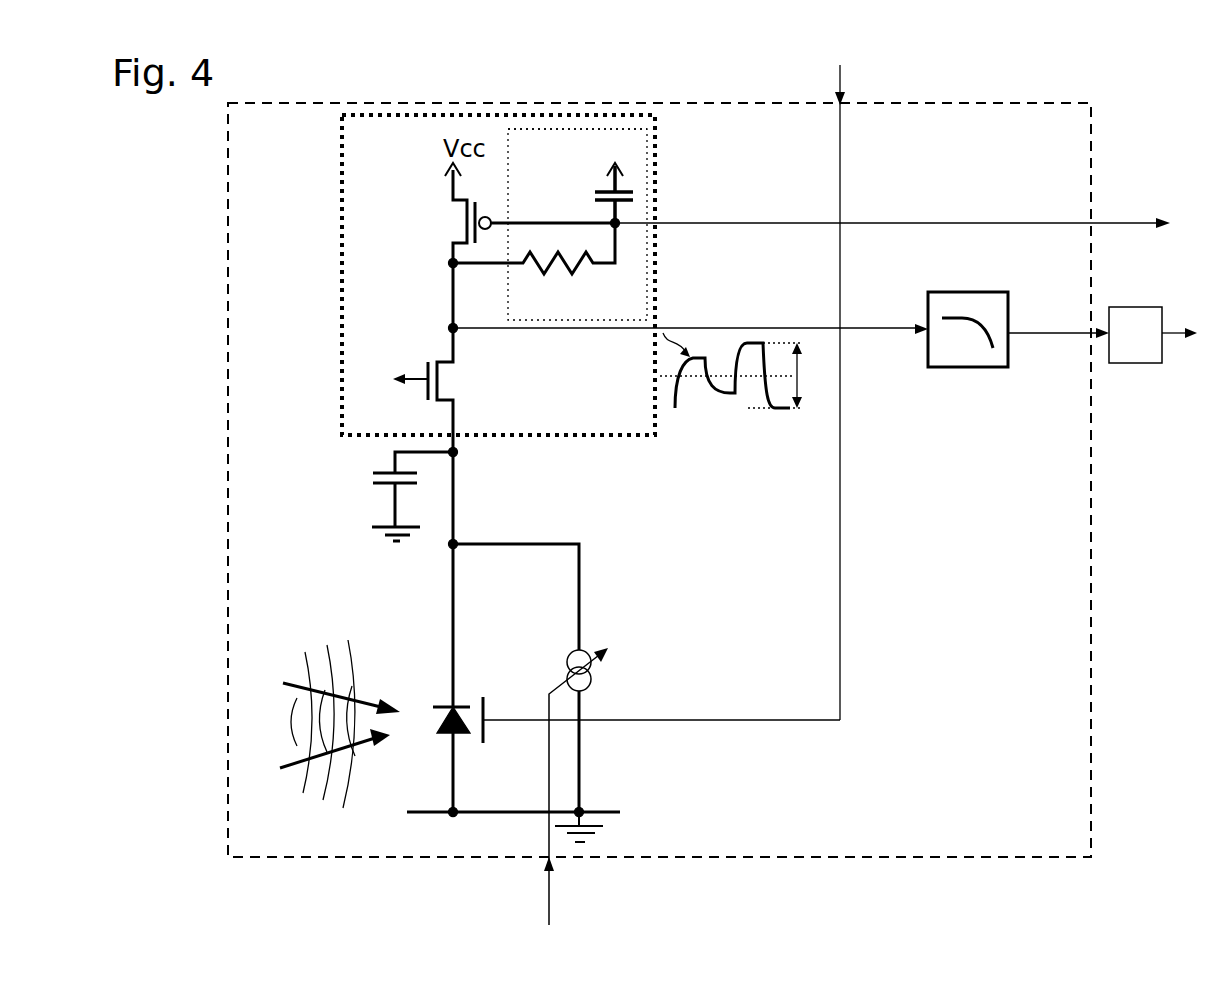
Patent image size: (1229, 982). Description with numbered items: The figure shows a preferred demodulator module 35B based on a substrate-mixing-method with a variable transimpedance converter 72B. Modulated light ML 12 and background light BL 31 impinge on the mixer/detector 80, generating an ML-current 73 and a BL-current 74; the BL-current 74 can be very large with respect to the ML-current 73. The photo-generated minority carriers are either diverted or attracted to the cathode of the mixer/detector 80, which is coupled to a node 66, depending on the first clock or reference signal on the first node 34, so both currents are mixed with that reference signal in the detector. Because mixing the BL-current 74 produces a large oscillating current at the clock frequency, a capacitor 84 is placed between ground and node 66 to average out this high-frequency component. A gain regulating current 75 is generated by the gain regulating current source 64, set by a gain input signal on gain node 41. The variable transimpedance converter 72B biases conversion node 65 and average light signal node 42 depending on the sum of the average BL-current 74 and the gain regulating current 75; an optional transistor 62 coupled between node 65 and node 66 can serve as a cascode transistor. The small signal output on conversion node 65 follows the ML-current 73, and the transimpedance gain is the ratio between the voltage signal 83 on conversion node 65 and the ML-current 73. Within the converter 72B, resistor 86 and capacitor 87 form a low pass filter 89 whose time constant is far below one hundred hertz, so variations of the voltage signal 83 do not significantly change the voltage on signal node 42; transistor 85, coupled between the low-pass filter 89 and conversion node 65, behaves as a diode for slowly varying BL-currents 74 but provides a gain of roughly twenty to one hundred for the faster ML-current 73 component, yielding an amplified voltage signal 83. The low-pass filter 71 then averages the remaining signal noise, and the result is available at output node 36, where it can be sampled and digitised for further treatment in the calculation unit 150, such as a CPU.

The ML 12 is at (325, 724).
The BL 31 is at (317, 758).
The first node 34 is at (838, 72).
The demodulator module 35B is at (718, 860).
The output node 36 is at (1060, 336).
The gain node 41 is at (546, 898).
The average light signal node 42 is at (1135, 226).
The transistor 62 is at (426, 399).
The gain regulating current source 64 is at (597, 670).
The conversion node 65 is at (605, 335).
The node 66 is at (455, 528).
The low-pass filter 71 is at (984, 368).
The variable transimpedance converter 72B is at (650, 183).
The ML-current 73 is at (435, 567).
The BL-current 74 is at (435, 605).
The gain regulating current 75 is at (598, 560).
The mixer/detector 80 is at (437, 734).
The voltage signal 83 is at (747, 370).
The capacitor 84 is at (373, 476).
The transistor 85 is at (445, 221).
The resistor 86 is at (570, 276).
The capacitor 87 is at (611, 168).
The low pass filter 89 is at (512, 186).
The calculation unit 150 is at (1135, 365).